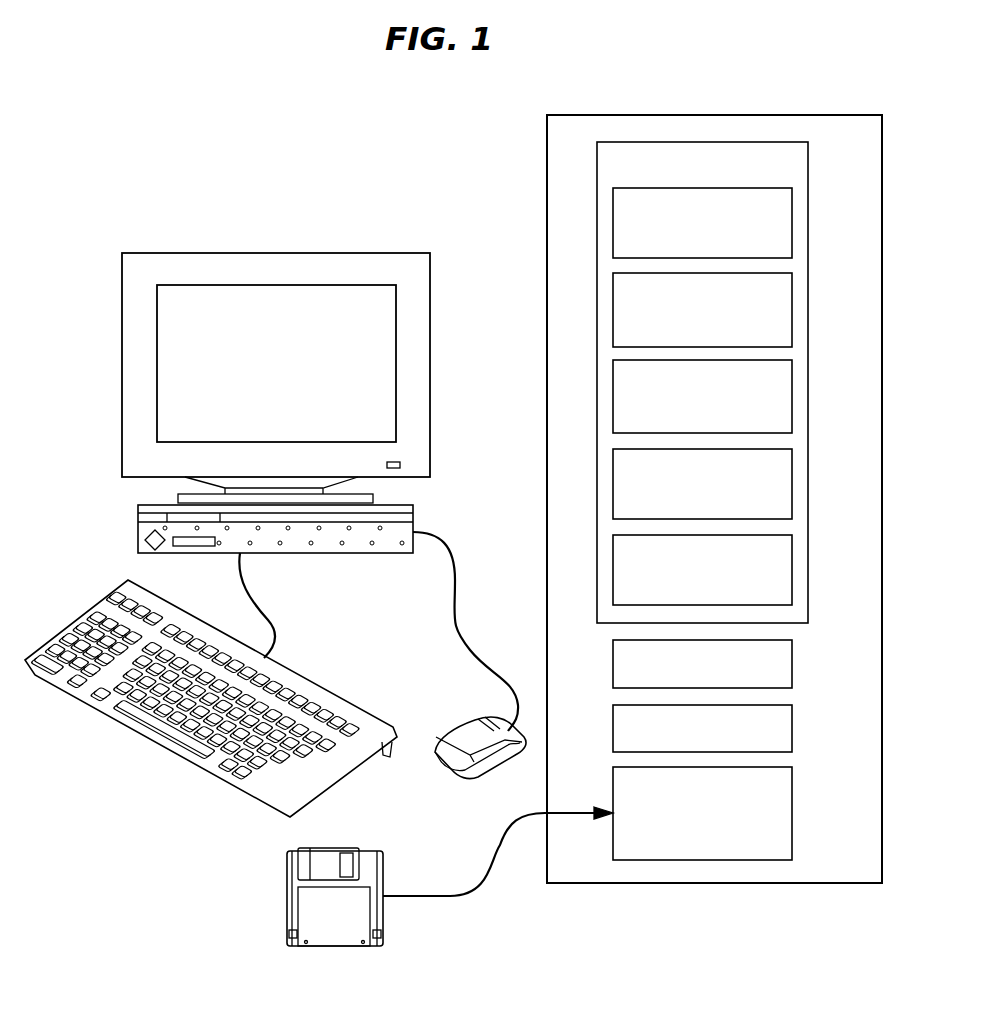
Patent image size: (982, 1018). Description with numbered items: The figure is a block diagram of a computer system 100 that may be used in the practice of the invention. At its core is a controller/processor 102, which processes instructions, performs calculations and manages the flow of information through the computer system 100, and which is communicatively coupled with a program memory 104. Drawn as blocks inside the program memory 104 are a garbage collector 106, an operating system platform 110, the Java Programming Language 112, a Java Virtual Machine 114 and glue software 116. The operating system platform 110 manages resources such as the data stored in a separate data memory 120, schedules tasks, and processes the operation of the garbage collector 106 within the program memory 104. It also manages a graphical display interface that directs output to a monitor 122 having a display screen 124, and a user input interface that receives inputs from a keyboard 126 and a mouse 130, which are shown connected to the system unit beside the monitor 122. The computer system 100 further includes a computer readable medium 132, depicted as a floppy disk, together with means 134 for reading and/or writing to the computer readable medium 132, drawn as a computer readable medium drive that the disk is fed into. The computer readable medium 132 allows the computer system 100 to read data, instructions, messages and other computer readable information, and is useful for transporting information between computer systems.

The computer system 100 is at (728, 83).
The controller/processor 102 is at (792, 670).
The program memory 104 is at (808, 162).
The garbage collector 106 is at (792, 565).
The operating system platform 110 is at (792, 390).
The Java Programming Language 112 is at (792, 303).
The Java Virtual Machine 114 is at (792, 218).
The glue software 116 is at (792, 478).
The data memory 120 is at (792, 733).
The monitor 122 is at (140, 253).
The display screen 124 is at (296, 378).
The keyboard 126 is at (322, 687).
The mouse 130 is at (460, 728).
The computer readable medium 132 is at (287, 893).
The means for reading and/or writing to the computer readable medium 134 is at (792, 797).